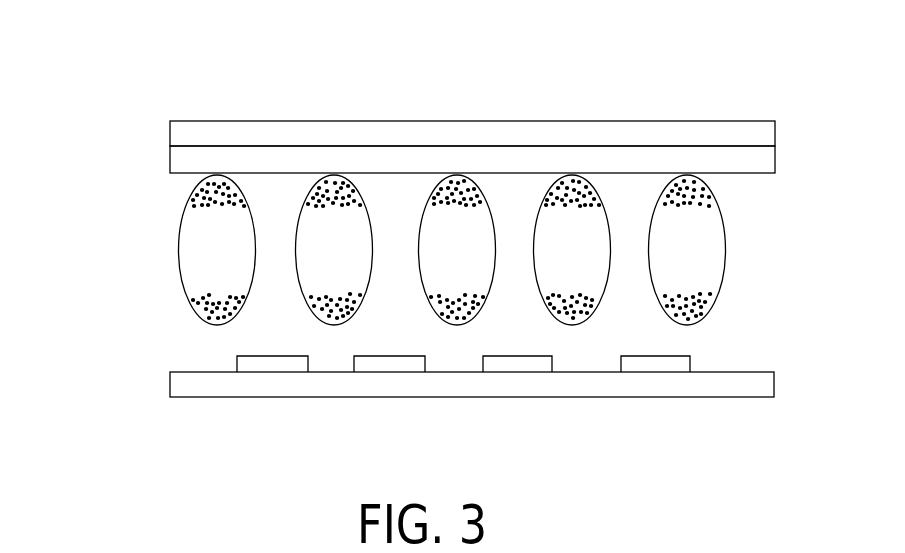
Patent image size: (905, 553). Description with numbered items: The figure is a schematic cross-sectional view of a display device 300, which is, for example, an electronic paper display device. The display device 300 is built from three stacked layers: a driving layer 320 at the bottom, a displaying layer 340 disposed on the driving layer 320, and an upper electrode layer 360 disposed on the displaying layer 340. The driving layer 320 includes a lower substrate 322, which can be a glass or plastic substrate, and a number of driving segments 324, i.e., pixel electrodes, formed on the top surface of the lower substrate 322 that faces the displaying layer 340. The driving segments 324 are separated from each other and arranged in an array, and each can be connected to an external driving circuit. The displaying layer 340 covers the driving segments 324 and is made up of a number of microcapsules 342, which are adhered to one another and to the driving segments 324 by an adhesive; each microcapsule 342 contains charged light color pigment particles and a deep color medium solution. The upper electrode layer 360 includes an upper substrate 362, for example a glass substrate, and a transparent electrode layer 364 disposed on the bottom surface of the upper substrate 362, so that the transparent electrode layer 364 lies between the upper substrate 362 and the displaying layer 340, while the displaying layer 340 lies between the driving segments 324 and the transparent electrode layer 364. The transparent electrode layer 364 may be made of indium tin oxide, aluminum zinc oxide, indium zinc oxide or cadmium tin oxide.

The display device 300 is at (285, 33).
The upper electrode layer 360 is at (157, 102).
The upper substrate 362 is at (350, 138).
The transparent electrode layer 364 is at (563, 158).
The displaying layer 340 is at (157, 245).
The microcapsule 342 is at (683, 244).
The driving layer 320 is at (157, 355).
The lower substrate 322 is at (198, 385).
The driving segment 324 is at (275, 363).